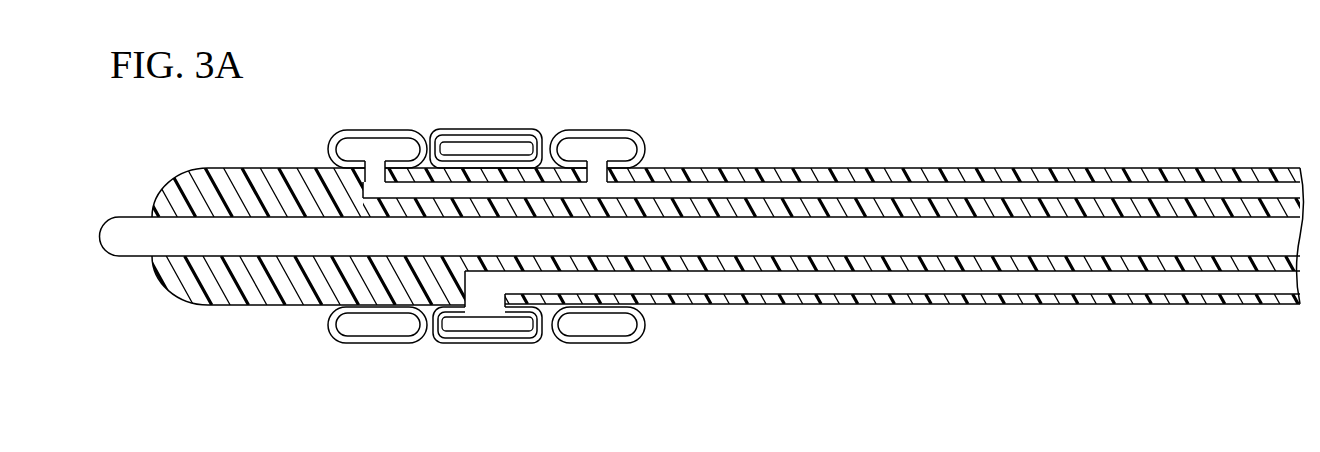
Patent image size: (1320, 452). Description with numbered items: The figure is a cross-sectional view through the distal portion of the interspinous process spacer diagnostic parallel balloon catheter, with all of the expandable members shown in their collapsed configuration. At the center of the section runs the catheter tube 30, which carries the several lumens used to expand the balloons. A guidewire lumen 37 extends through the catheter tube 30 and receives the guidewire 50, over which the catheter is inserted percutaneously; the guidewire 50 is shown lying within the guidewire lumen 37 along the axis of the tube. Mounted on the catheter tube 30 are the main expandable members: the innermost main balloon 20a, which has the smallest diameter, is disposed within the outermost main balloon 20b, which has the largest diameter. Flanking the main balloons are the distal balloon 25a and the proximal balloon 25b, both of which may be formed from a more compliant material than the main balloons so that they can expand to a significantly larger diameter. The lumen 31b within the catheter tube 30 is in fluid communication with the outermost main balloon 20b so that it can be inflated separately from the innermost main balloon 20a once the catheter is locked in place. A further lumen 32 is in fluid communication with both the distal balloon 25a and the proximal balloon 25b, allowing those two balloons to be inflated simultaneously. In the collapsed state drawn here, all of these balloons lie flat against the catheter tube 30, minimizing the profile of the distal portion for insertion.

The innermost main balloon 20a is at (482, 335).
The outermost main balloon 20b is at (483, 129).
The distal balloon 25a is at (375, 130).
The proximal balloon 25b is at (605, 343).
The catheter tube 30 is at (947, 167).
The lumen 31b is at (897, 283).
The lumen 32 is at (730, 192).
The guidewire lumen 37 is at (1148, 256).
The guidewire 50 is at (123, 243).